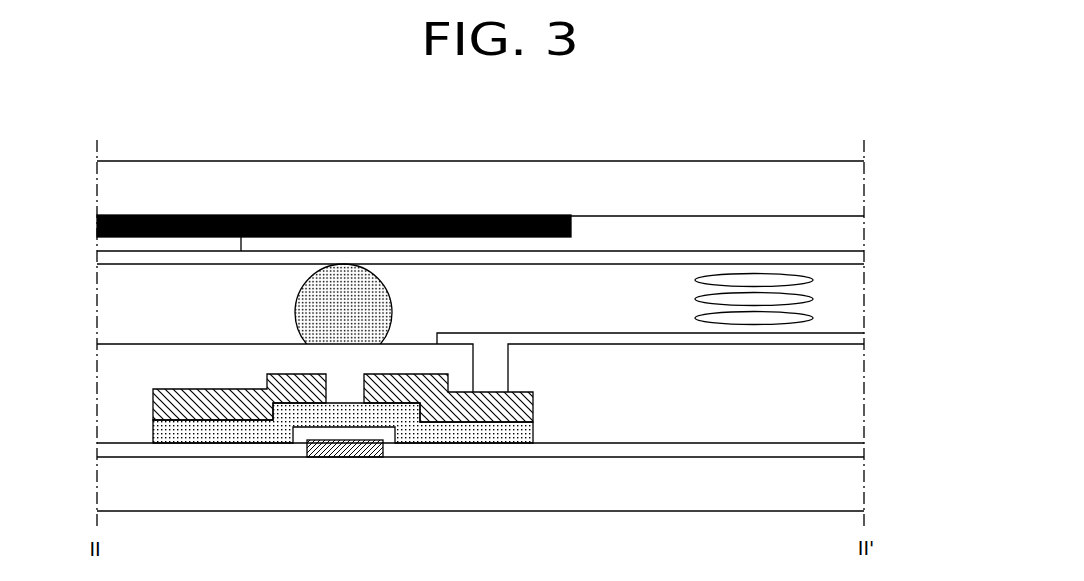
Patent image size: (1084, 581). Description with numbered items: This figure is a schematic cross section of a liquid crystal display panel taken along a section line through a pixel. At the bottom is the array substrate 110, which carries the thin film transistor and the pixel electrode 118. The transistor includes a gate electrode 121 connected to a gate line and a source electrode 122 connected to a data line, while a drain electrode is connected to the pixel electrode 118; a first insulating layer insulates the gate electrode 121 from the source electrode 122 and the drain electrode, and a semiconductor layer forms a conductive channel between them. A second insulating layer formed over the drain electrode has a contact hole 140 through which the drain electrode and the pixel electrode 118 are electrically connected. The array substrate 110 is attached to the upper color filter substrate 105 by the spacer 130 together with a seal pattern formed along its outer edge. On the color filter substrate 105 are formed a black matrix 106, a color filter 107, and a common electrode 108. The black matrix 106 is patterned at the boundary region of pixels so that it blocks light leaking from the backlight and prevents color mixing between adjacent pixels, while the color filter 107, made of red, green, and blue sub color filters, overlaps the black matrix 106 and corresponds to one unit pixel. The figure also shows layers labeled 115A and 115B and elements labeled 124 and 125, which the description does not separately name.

The color filter substrate 105 is at (860, 189).
The black matrix 106 is at (447, 215).
The color filter 107 is at (860, 233).
The common electrode 108 is at (860, 262).
The spacer 130 is at (346, 281).
The contact hole 140 is at (813, 299).
The pixel electrode 118 is at (860, 340).
The passivation layer 115B is at (860, 395).
The gate insulating layer 115A is at (860, 450).
The array substrate 110 is at (860, 488).
The gate electrode 121 is at (340, 457).
The source electrode 122 is at (222, 418).
The semiconductor layer 124 is at (436, 443).
The drain electrode 125 is at (487, 422).